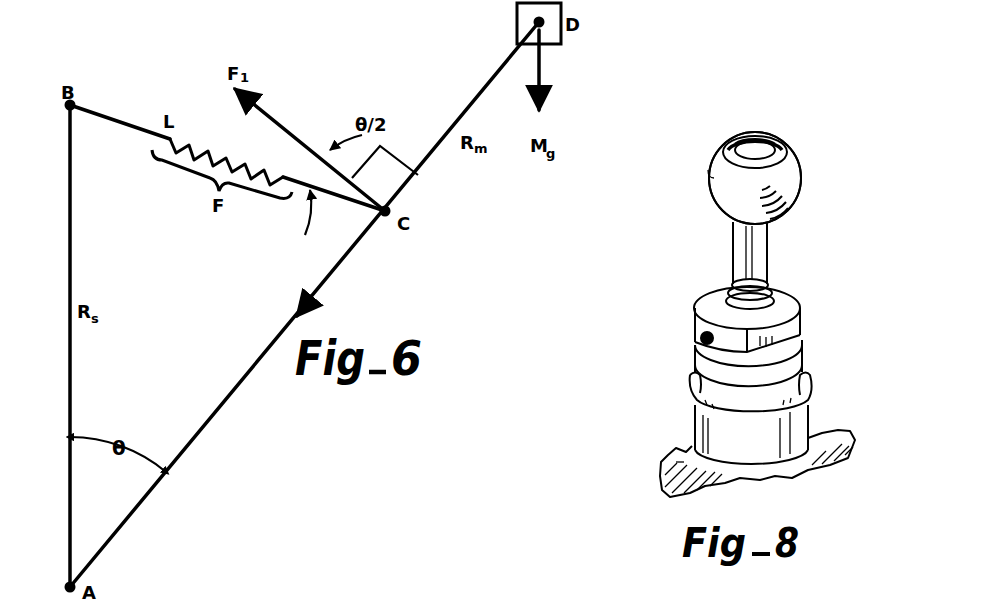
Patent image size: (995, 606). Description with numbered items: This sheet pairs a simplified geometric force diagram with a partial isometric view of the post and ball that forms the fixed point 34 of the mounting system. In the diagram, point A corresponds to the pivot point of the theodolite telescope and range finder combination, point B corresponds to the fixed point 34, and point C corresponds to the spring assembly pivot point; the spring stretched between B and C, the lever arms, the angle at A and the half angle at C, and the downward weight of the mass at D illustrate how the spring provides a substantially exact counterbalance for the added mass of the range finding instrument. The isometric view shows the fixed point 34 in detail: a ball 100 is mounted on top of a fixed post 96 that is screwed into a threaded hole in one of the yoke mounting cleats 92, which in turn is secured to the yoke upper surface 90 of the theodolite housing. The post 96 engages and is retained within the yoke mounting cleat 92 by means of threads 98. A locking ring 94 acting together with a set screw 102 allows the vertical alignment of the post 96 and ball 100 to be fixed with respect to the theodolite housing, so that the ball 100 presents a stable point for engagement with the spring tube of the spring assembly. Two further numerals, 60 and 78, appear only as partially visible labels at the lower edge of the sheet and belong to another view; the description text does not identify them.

In FIG. 8, the fixed point 34 is at (789, 118).
In FIG. 8, the ball 100 is at (710, 172).
In FIG. 8, the fixed post 96 is at (775, 232).
In FIG. 8, the threads 98 is at (772, 284).
In FIG. 8, the locking ring 94 is at (700, 318).
In FIG. 8, the set screw 102 is at (701, 338).
In FIG. 8, the yoke mounting cleat 92 is at (688, 374).
In FIG. 8, the yoke upper surface 90 is at (680, 443).
In FIG. 6, the component (FIG. 7, partially shown) 60 is at (408, 605).
In FIG. 6, the component (FIG. 7, partially shown) 78 is at (496, 605).